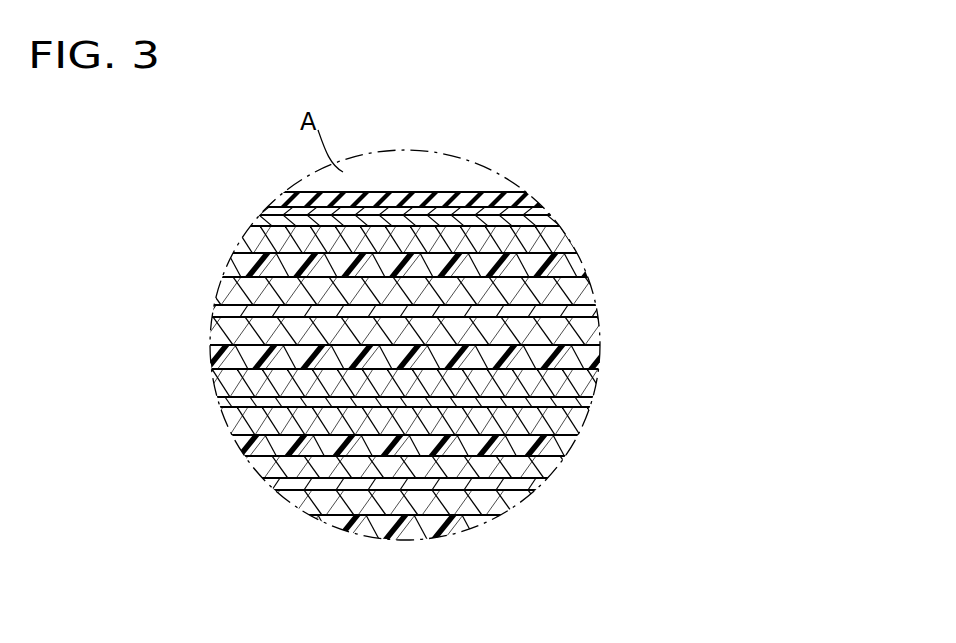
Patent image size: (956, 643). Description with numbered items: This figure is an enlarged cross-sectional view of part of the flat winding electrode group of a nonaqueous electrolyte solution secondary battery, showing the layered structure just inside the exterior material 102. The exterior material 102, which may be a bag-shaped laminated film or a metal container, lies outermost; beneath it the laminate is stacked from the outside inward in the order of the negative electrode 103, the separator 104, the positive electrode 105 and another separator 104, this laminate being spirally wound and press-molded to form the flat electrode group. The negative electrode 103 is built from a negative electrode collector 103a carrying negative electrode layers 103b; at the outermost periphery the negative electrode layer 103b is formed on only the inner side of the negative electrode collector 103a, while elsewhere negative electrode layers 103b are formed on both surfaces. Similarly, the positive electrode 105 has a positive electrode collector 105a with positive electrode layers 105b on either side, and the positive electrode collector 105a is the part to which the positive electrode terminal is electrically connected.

The exterior material 102 is at (527, 192).
The negative electrode 103 is at (678, 168).
The negative electrode collector 103a is at (553, 214).
The negative electrode layer 103b is at (550, 240).
The separator 104 is at (252, 270).
The positive electrode 105 is at (703, 250).
The positive electrode collector 105a is at (593, 312).
The positive electrode layer 105b is at (580, 290).